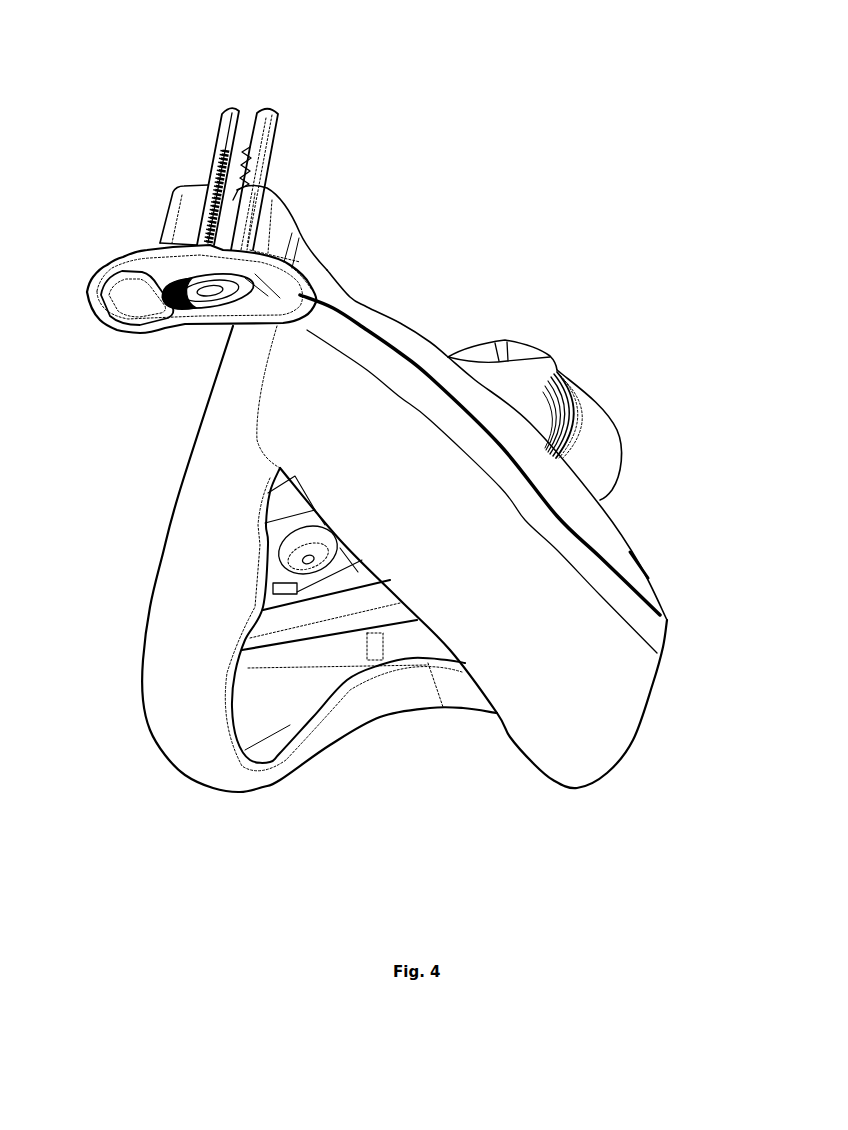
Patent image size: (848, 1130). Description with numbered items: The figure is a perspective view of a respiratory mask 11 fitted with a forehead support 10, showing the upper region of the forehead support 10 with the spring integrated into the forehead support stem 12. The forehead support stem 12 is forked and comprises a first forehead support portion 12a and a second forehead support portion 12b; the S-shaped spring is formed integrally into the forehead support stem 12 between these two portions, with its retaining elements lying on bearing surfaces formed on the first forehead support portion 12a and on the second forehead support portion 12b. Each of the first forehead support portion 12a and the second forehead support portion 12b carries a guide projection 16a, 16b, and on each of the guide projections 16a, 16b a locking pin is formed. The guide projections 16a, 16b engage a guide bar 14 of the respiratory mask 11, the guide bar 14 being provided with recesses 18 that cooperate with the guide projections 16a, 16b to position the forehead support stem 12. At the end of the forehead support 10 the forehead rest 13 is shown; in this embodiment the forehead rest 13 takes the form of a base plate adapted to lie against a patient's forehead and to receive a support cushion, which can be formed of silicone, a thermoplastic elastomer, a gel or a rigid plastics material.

The forehead support 10 is at (294, 99).
The respiratory mask 11 is at (634, 489).
The forehead support stem 12 is at (352, 284).
The first forehead support portion 12a is at (158, 238).
The second forehead support portion 12b is at (283, 237).
The forehead rest 13 is at (173, 333).
The guide bar 14 is at (262, 127).
The guide projection 16a is at (190, 210).
The guide projection 16b is at (247, 213).
The recesses 18 is at (220, 157).